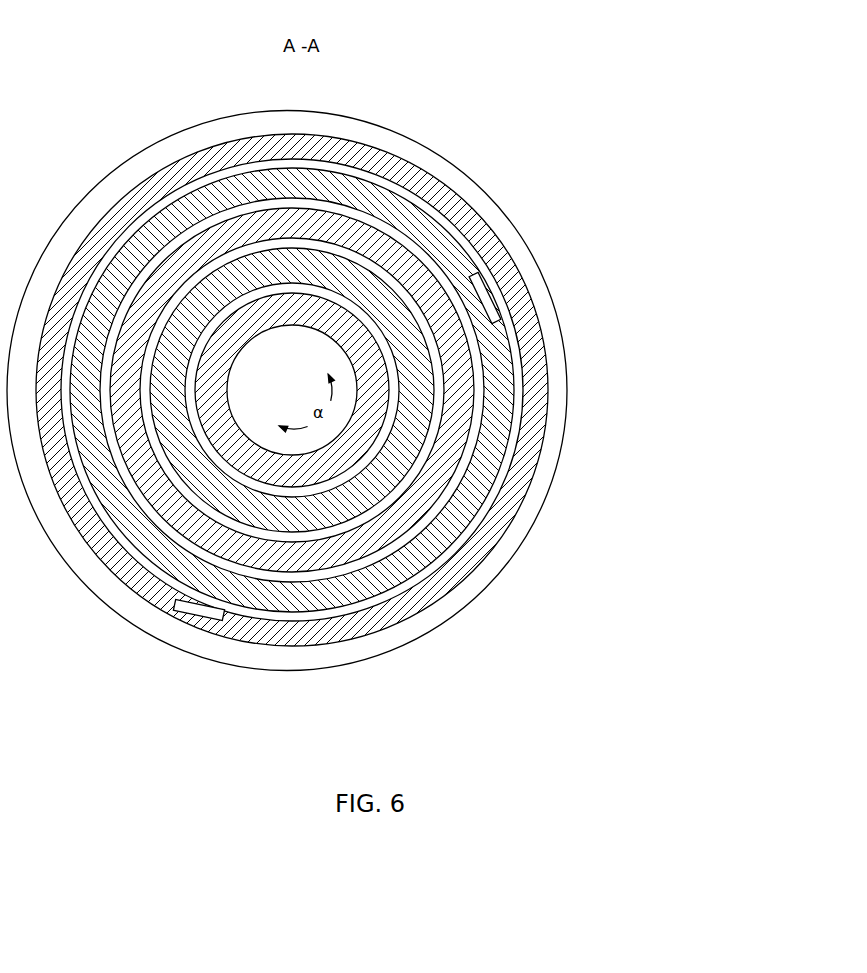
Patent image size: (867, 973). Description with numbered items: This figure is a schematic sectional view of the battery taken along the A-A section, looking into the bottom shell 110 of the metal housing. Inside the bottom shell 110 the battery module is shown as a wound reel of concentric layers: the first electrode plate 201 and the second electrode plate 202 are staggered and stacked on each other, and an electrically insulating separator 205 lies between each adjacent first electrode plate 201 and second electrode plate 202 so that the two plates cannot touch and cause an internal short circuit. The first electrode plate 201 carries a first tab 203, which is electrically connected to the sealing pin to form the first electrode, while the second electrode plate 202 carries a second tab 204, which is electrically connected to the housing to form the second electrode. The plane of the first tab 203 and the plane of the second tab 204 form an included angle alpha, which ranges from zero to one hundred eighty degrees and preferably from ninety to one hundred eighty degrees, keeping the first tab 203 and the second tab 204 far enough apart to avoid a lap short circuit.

The bottom shell 110 is at (485, 192).
The first electrode plate 201 is at (493, 342).
The second electrode plate 202 is at (530, 385).
The first tab 203 is at (294, 391).
The second tab 204 is at (294, 391).
The separator 205 is at (503, 473).